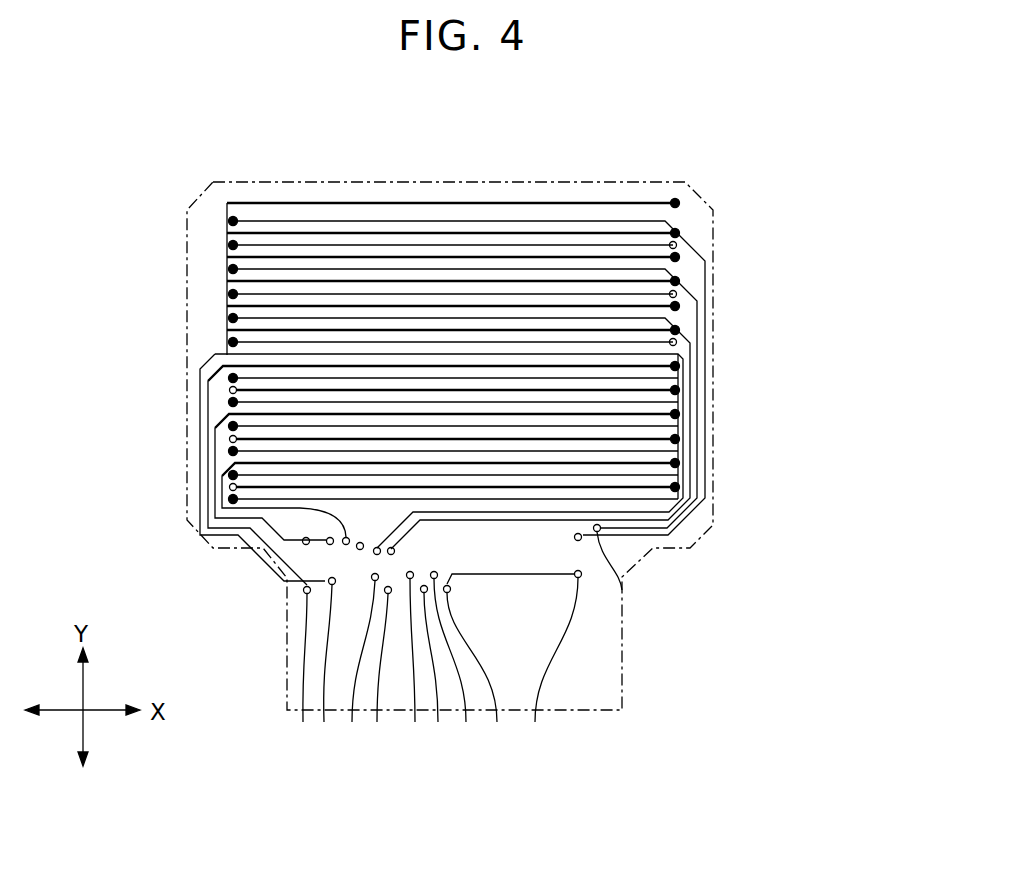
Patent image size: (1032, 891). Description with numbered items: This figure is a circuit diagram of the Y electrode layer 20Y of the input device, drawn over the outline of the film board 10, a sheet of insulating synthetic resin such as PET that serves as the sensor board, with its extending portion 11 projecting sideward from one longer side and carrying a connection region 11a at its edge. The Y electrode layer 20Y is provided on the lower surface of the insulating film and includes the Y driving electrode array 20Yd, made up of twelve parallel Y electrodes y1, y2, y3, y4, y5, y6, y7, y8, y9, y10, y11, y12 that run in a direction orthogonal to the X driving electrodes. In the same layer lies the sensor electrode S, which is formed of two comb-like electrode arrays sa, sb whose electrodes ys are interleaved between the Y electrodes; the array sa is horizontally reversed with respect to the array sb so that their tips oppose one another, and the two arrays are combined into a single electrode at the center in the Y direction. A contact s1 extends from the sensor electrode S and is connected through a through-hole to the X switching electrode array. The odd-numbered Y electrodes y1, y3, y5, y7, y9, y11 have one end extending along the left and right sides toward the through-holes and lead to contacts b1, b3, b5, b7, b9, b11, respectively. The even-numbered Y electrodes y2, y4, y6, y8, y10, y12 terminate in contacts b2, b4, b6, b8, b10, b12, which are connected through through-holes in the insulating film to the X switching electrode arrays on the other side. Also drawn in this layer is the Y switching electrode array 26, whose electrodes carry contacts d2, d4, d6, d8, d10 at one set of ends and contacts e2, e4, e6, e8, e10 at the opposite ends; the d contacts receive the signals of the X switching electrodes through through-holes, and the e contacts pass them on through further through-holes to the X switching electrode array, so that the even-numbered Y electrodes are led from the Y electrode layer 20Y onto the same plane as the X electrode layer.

The film board 10 is at (624, 709).
The extending portion 11 is at (283, 668).
The terminal connection area 11a is at (282, 677).
The Y electrode layer 20Y is at (588, 678).
The Y driving electrode array 20Yd is at (797, 140).
The Y switching electrode array 26 is at (468, 522).
The Y electrode y1 is at (680, 203).
The Y electrode y2 is at (680, 233).
The Y electrode y3 is at (680, 257).
The Y electrode y4 is at (680, 281).
The Y electrode y5 is at (680, 306).
The Y electrode y6 is at (680, 330).
The Y electrode y7 is at (680, 366).
The Y electrode y8 is at (680, 390).
The Y electrode y9 is at (680, 414).
The Y electrode y10 is at (680, 439).
The Y electrode y11 is at (680, 463).
The Y electrode y12 is at (680, 487).
The electrodes ys is at (316, 257).
The comb-like electrode array sa is at (227, 252).
The comb-like electrode array sb is at (695, 498).
The sensor electrode S is at (202, 358).
The contact s1 is at (307, 598).
The contact b1 is at (498, 693).
The contact b2 is at (690, 260).
The contact b3 is at (454, 690).
The contact b4 is at (688, 300).
The contact b5 is at (400, 690).
The contact b6 is at (680, 340).
The contact b7 is at (372, 667).
The contact b8 is at (228, 390).
The contact b9 is at (305, 580).
The contact b10 is at (228, 439).
The contact b11 is at (300, 540).
The contact b12 is at (228, 487).
The contact d2 is at (622, 645).
The contact d4 is at (622, 612).
The contact d6 is at (625, 580).
The contact d8 is at (297, 780).
The contact d10 is at (245, 548).
The contact e2 is at (470, 666).
The contact e4 is at (430, 666).
The contact e6 is at (441, 669).
The contact e8 is at (345, 780).
The contact e10 is at (215, 514).